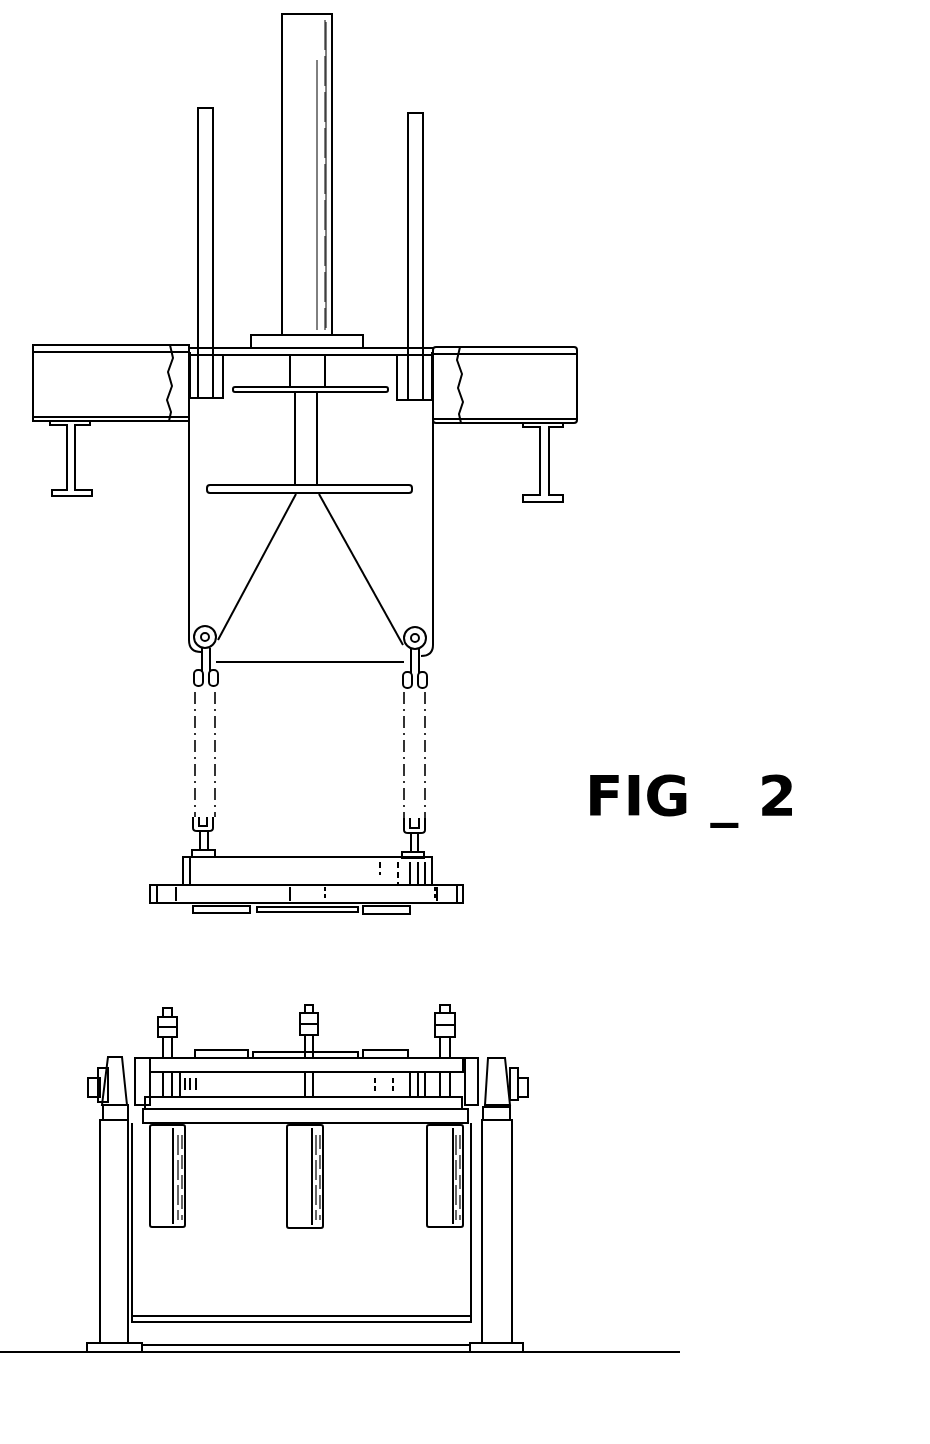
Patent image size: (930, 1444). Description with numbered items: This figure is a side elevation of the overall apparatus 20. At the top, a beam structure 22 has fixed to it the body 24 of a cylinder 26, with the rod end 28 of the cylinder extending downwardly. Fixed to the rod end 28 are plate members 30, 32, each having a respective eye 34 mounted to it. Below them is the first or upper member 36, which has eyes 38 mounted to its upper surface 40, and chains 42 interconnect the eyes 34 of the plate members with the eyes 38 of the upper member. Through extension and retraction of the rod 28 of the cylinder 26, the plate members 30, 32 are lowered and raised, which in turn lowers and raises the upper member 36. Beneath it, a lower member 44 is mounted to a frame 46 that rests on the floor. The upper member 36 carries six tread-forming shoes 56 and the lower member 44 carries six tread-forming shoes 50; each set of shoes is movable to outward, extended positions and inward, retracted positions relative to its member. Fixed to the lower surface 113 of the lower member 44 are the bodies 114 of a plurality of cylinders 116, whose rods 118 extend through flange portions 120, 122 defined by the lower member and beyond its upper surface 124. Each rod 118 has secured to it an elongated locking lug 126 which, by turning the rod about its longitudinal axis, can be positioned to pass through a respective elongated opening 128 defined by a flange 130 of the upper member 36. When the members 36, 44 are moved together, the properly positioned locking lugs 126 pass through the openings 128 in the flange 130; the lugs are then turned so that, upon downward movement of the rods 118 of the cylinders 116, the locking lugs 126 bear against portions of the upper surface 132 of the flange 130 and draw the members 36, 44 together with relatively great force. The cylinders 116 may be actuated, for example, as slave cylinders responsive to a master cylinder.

The overall apparatus 20 is at (598, 590).
The beam structure 22 is at (560, 332).
The body 24 is at (333, 128).
The cylinder 26 is at (343, 237).
The rod end 28 is at (298, 367).
The plate member 30 is at (236, 586).
The plate member 32 is at (409, 586).
The eyes 34 is at (197, 662).
The upper member 36 is at (362, 855).
The eyes 38 is at (207, 843).
The upper surface 40 is at (290, 857).
The chains 42 is at (195, 737).
The lower member 44 is at (210, 1047).
The frame 46 is at (515, 1257).
The tread-forming shoes 50 is at (257, 1050).
The tread-forming shoes 56 is at (221, 913).
The lower surface 113 is at (227, 1124).
The bodies 114 is at (168, 1230).
The cylinders 116 is at (150, 1195).
The rods 118 is at (177, 1042).
The flange portion 120 is at (462, 1106).
The flange portion 122 is at (470, 1058).
The upper surface 124 is at (425, 1060).
The locking lug 126 is at (157, 1030).
The elongated opening 128 is at (176, 895).
The flange 130 is at (150, 893).
The upper surface 132 is at (153, 886).